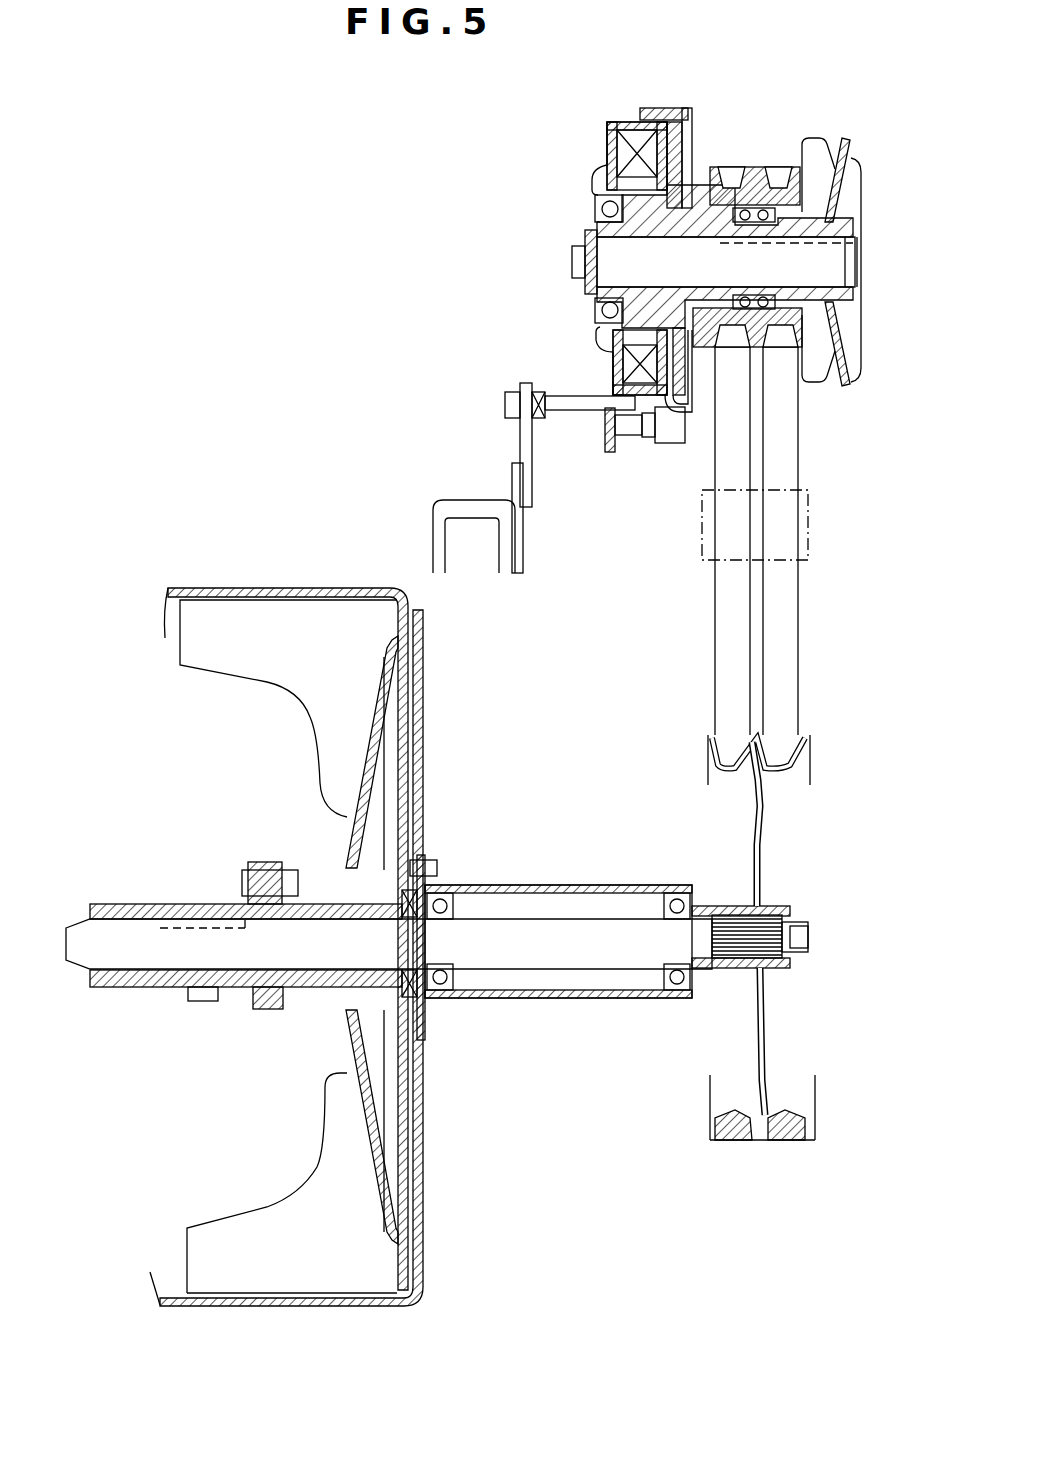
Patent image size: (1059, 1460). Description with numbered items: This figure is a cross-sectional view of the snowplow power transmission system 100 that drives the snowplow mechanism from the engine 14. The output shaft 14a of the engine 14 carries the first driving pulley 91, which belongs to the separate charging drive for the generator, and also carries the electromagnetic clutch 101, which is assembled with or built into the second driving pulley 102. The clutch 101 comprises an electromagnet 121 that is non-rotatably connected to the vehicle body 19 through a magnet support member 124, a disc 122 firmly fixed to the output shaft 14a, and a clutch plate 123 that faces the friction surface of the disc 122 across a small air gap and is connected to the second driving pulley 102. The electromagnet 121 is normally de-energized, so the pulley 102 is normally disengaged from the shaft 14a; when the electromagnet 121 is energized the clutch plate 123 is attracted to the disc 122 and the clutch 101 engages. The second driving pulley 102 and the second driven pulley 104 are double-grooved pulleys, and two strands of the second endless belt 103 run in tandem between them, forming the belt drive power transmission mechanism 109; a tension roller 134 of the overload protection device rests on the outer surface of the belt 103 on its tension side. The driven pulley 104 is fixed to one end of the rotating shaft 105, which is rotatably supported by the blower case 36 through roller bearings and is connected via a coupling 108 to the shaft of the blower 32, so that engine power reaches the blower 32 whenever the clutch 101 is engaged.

The snowplow power transmission system 100 is at (392, 206).
The electromagnetic clutch 101 is at (577, 182).
The electromagnet 121 is at (603, 150).
The disc 122 is at (656, 112).
The clutch plate 123 is at (674, 124).
The second driving pulley 102 is at (750, 176).
The first driving pulley 91 is at (814, 148).
The engine 14 is at (885, 162).
The output shaft 14a is at (834, 264).
The magnet support member 124 is at (524, 385).
The belt drive power transmission mechanism 109 is at (811, 418).
The vehicle body 19 is at (460, 500).
The tension roller 134 is at (812, 515).
The second endless belt 103 is at (803, 652).
The blower 32 is at (228, 628).
The blower case 36 is at (300, 588).
The coupling 108 is at (262, 865).
The rotating shaft 105 is at (555, 925).
The second driven pulley 104 is at (773, 822).